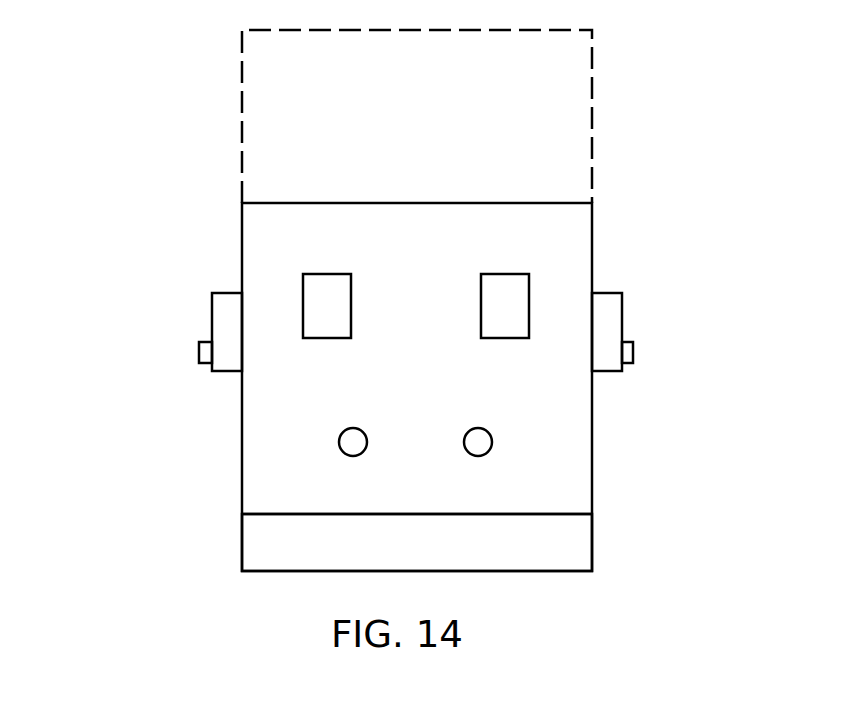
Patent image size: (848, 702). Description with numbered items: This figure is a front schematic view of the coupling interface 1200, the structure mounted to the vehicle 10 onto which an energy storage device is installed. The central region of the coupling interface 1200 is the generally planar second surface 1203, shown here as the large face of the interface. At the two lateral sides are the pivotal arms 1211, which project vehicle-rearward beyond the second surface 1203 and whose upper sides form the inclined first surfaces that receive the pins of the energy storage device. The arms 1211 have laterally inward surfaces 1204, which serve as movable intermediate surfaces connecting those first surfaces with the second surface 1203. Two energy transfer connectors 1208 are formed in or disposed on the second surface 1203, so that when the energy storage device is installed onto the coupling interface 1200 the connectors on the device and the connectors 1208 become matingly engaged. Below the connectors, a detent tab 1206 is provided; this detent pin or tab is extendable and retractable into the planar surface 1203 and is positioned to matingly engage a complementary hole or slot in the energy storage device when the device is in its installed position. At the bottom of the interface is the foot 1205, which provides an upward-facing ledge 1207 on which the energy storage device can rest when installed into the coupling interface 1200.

The vehicle 10 is at (429, 138).
The coupling interface 1200 is at (550, 187).
The second surface 1203 is at (440, 369).
The laterally inward surfaces 1204 is at (212, 312).
The foot 1205 is at (592, 548).
The detent tab 1206 is at (493, 442).
The ledge 1207 is at (497, 514).
The energy transfer connectors 1208 is at (303, 296).
The pivotal arms 1211 is at (199, 352).